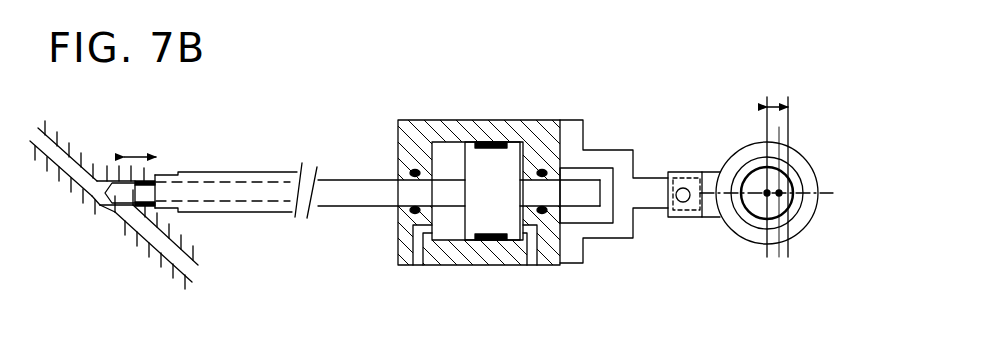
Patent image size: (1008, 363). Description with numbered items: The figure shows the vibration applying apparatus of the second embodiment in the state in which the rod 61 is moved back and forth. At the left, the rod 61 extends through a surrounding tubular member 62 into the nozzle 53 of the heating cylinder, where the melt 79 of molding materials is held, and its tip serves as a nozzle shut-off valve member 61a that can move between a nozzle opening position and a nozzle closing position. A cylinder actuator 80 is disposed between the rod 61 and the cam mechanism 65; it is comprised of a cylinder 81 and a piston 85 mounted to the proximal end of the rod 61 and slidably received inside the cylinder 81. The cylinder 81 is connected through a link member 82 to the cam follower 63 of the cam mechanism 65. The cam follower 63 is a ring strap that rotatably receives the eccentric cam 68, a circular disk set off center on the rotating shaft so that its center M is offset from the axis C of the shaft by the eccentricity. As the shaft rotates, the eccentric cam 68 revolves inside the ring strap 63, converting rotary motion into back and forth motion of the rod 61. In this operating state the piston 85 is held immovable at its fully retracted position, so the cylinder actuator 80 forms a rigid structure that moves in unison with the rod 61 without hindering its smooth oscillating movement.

The nozzle 53 is at (75, 197).
The rod 61 is at (212, 178).
The nozzle shut-off valve member 61a is at (143, 232).
The tube 62 is at (248, 172).
The cam follower 63 is at (733, 152).
The cam mechanism 65 is at (805, 242).
The eccentric cam 68 is at (752, 200).
The melt 79 is at (188, 264).
The cylinder actuator 80 is at (478, 266).
The cylinder 81 is at (440, 120).
The link member 82 is at (608, 150).
The piston 85 is at (490, 182).
The center of the eccentric cam M is at (765, 198).
The axis of the rotating shaft C is at (790, 180).